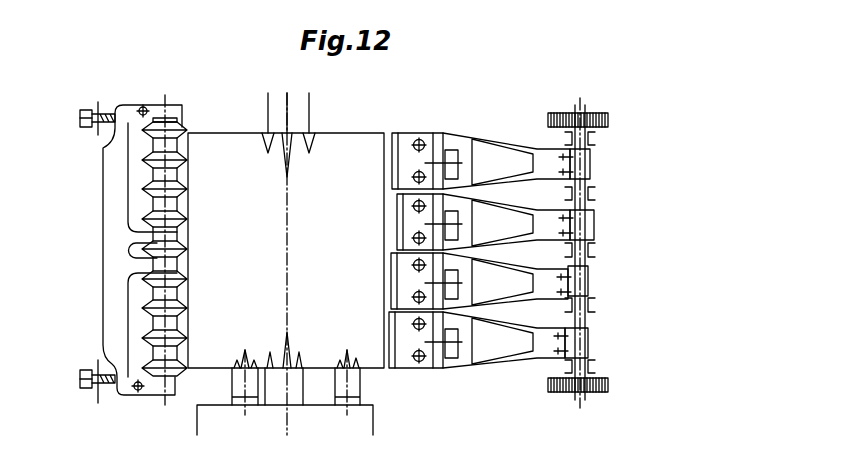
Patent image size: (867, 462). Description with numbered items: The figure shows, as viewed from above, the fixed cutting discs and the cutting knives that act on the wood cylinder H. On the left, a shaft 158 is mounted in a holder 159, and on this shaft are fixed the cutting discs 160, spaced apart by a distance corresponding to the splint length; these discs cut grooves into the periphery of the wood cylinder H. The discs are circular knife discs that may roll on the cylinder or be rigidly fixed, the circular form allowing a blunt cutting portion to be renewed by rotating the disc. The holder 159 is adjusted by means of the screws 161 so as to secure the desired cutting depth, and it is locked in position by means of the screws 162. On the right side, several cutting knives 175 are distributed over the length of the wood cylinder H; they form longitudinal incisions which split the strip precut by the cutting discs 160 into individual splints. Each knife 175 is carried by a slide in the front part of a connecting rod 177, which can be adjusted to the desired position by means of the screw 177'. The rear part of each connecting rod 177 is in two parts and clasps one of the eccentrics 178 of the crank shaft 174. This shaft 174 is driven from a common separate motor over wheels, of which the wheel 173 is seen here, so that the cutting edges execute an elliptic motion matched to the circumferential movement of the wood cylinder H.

The wood cylinder H is at (347, 127).
The shaft 158 is at (145, 177).
The holder 159 is at (96, 253).
The cutting discs 160 is at (191, 125).
The screws 161 is at (90, 103).
The screws 162 is at (146, 100).
The wheel 173 is at (562, 401).
The crank shaft 174 is at (597, 202).
The cutting knives 175 is at (415, 129).
The connecting rod 177 is at (499, 140).
The screw 177' is at (451, 363).
The eccentrics 178 is at (597, 284).